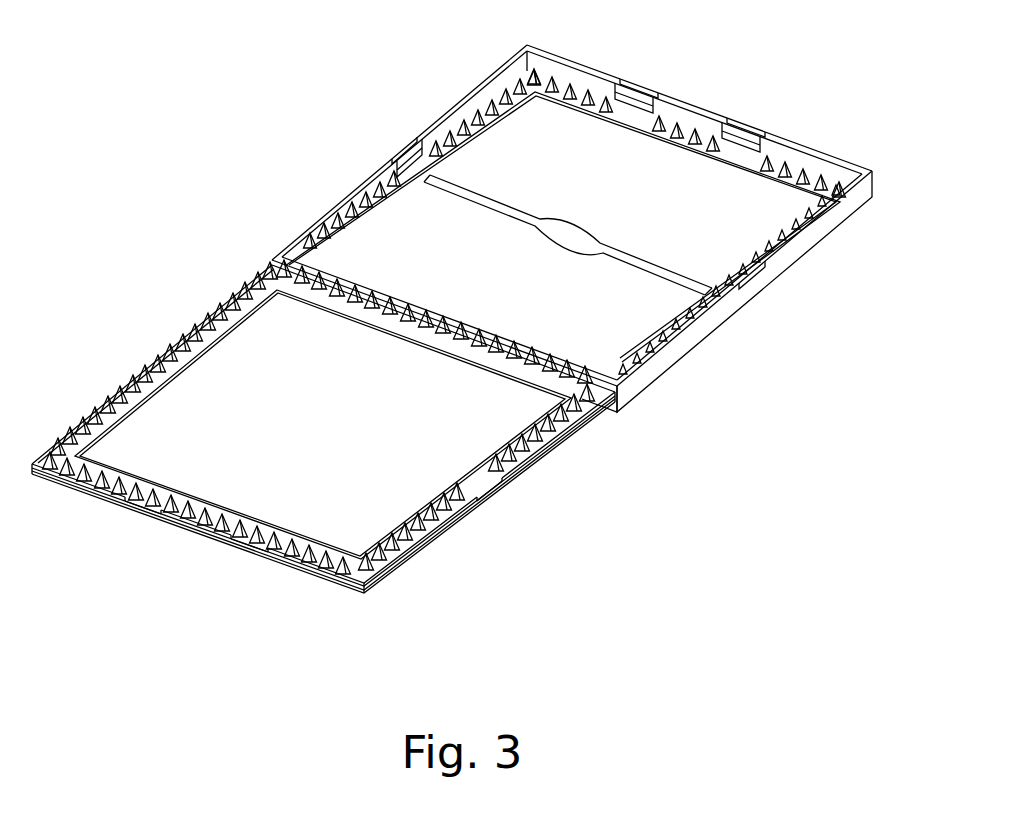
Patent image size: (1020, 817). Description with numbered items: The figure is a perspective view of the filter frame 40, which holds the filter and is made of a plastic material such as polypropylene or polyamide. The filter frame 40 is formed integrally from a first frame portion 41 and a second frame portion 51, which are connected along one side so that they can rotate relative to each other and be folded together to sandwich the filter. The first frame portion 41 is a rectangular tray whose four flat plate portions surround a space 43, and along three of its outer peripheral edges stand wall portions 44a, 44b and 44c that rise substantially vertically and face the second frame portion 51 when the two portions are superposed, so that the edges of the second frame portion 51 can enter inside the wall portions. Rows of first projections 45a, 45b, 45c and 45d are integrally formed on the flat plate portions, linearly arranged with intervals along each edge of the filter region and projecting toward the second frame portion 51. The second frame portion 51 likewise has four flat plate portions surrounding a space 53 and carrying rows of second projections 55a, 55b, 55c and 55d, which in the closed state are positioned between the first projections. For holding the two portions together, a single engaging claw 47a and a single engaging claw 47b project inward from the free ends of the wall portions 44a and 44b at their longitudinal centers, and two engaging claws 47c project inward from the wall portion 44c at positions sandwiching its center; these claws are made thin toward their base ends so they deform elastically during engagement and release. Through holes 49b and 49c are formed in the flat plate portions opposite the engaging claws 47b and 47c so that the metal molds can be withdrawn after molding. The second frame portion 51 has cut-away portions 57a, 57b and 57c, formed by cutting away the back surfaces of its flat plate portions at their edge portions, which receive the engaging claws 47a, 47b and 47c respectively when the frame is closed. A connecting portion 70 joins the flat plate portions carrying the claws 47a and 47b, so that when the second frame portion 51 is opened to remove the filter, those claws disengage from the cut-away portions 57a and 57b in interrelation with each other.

The filter frame 40 is at (467, 325).
The first frame portion 41 is at (587, 214).
The space 43 is at (723, 240).
The wall portion 44a is at (817, 230).
The wall portion 44b is at (340, 210).
The wall portion 44c is at (698, 107).
The first projections 45a is at (790, 222).
The first projections 45b is at (505, 113).
The first projections 45c is at (602, 110).
The first projections 45d is at (430, 313).
The engaging claw 47a is at (757, 276).
The engaging claw 47b is at (400, 145).
The engaging claws 47c is at (635, 85).
The through hole 49b is at (402, 178).
The through holes 49c is at (643, 115).
The connecting portion 70 is at (483, 200).
The second frame portion 51 is at (323, 424).
The space 53 is at (247, 347).
The second projections 55a is at (513, 433).
The second projections 55b is at (198, 340).
The second projections 55c is at (203, 507).
The second projections 55d is at (393, 320).
The cut-away portion 57a is at (487, 487).
The cut-away portion 57b is at (145, 362).
The cut-away portions 57c is at (140, 510).